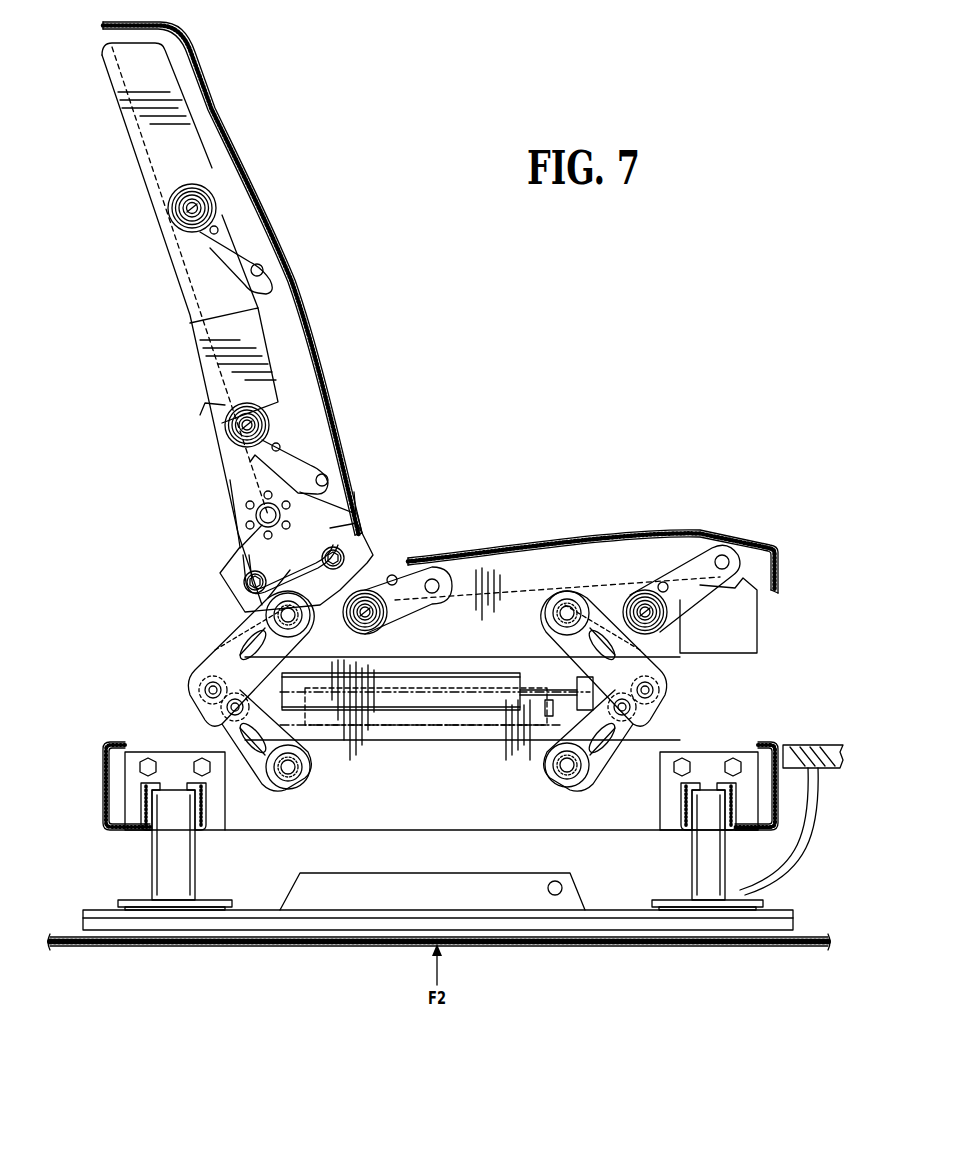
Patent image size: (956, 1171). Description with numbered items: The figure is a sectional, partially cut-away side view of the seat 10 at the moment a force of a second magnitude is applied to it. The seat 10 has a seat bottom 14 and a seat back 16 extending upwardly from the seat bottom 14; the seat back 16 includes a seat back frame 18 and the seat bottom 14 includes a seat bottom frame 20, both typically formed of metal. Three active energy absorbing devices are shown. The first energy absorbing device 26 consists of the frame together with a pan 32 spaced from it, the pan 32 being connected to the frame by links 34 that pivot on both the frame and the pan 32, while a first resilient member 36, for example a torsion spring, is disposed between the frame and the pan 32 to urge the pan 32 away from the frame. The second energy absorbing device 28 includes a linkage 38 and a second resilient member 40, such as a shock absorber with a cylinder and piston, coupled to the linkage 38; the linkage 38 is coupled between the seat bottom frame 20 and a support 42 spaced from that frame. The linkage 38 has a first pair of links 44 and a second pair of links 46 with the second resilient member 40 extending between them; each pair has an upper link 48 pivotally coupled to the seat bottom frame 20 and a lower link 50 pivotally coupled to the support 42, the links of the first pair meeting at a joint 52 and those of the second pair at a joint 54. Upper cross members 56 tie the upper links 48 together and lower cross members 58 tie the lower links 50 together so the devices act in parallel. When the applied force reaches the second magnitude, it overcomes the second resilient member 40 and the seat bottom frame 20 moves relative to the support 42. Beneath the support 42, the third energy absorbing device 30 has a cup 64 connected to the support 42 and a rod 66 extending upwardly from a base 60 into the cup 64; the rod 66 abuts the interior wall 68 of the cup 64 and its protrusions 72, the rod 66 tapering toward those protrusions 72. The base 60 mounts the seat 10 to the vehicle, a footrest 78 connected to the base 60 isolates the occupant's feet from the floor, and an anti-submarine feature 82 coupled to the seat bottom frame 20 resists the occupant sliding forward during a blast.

The seat 10 is at (330, 117).
The seat bottom 14 is at (132, 728).
The seat back 16 is at (180, 355).
The seat back frame 18 is at (124, 118).
The seat bottom frame 20 is at (745, 634).
The first energy absorbing device 26 is at (256, 157).
The second energy absorbing device 28 is at (176, 674).
The third energy absorbing device 30 is at (143, 868).
The pan 32 is at (222, 110).
The links 34 is at (405, 574).
The first resilient member 36 is at (168, 218).
The linkage 38 is at (170, 692).
The second resilient member 40 is at (432, 680).
The support 42 is at (104, 800).
The first pair of links 44 is at (213, 665).
The second pair of links 46 is at (668, 691).
The upper link 48 is at (248, 620).
The lower link 50 is at (214, 713).
The joint 52 is at (208, 686).
The joint 54 is at (656, 694).
The upper cross members 56 is at (282, 611).
The lower cross members 58 is at (292, 769).
The base 60 is at (83, 918).
The cup 64 is at (146, 808).
The rod 66 is at (176, 868).
The interior wall 68 is at (160, 816).
The protrusions 72 is at (146, 804).
The footrest 78 is at (810, 745).
The anti-submarine feature 82 is at (668, 537).